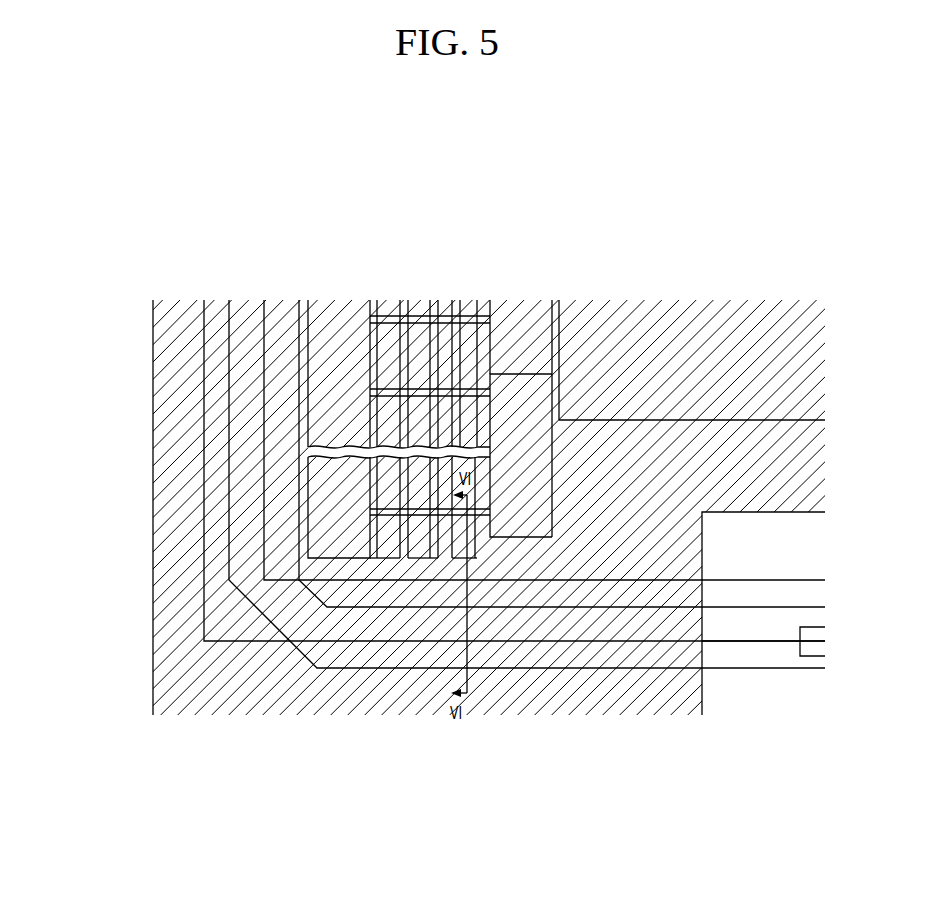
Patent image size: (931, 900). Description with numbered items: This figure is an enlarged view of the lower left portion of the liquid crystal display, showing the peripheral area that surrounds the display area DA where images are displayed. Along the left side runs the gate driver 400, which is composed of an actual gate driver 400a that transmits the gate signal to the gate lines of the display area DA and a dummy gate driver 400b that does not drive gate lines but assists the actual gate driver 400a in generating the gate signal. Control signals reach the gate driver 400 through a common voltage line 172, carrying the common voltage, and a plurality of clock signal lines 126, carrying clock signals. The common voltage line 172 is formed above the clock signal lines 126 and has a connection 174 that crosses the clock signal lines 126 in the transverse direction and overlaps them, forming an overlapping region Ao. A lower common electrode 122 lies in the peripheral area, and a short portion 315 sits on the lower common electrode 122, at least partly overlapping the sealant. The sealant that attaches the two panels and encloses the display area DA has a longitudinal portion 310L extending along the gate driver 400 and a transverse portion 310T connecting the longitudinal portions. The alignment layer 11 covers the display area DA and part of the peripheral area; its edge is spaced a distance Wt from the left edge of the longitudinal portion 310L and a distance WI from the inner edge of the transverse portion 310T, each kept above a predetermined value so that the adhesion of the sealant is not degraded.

The alignment layer 11 is at (153, 684).
The longitudinal portion 310L is at (264, 407).
The transverse portion 310T is at (533, 580).
The lower common electrode 122 is at (299, 527).
The common voltage line 172 is at (333, 559).
The clock signal lines 126 is at (407, 558).
The connection 174 is at (443, 512).
The gate driver 400 is at (657, 365).
The actual gate driver 400a is at (559, 342).
The dummy gate driver 400b is at (552, 468).
The short portion 315 is at (805, 656).
The display area DA is at (725, 421).
The overlapping region Ao is at (419, 530).
The distance Wl WI is at (784, 512).
The distance Wt is at (204, 445).